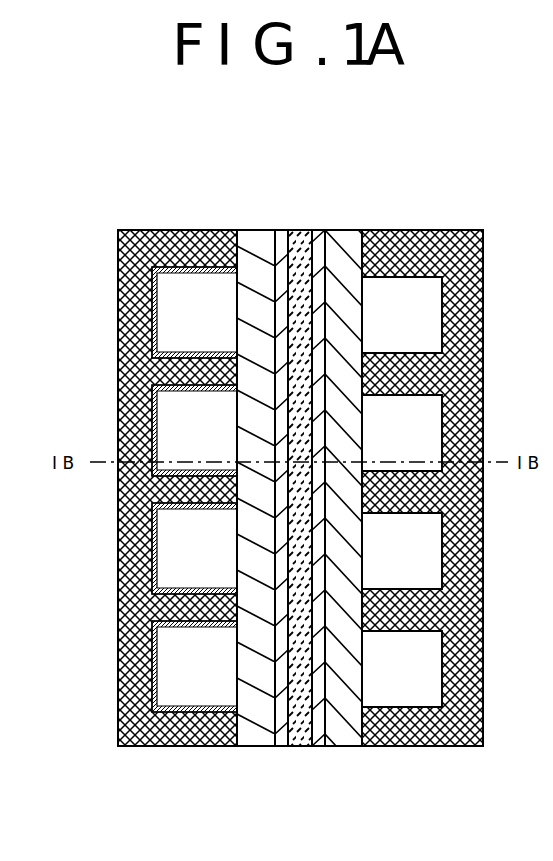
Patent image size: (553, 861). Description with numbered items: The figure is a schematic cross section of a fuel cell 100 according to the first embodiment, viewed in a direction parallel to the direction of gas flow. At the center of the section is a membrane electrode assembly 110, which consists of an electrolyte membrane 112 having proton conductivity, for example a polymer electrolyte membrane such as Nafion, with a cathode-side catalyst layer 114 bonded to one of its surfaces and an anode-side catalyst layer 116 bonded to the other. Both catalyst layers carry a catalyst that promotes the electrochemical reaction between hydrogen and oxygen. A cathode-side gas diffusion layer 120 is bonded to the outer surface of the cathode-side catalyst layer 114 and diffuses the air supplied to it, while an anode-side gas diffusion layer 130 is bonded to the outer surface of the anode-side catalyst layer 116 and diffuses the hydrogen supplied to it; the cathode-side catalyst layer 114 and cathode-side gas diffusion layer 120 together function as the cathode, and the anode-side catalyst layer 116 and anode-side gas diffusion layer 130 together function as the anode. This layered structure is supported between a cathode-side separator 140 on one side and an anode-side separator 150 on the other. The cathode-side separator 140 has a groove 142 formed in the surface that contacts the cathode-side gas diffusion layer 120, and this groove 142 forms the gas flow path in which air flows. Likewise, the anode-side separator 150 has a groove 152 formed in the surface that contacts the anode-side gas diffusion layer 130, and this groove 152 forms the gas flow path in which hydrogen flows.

The fuel cell 100 is at (157, 160).
The membrane electrode assembly 110 is at (380, 163).
The electrolyte membrane 112 is at (301, 230).
The cathode-side catalyst layer 114 is at (281, 230).
The anode-side catalyst layer 116 is at (319, 230).
The cathode-side gas diffusion layer 120 is at (246, 230).
The anode-side gas diffusion layer 130 is at (345, 229).
The cathode-side separator 140 is at (137, 230).
The groove 142 is at (150, 351).
The anode-side separator 150 is at (462, 230).
The groove 152 is at (442, 350).